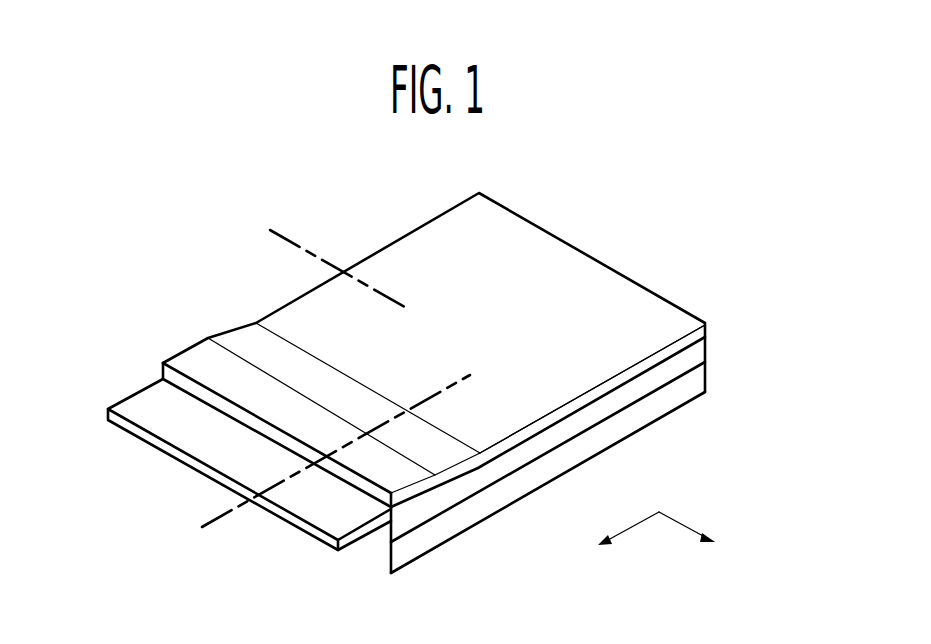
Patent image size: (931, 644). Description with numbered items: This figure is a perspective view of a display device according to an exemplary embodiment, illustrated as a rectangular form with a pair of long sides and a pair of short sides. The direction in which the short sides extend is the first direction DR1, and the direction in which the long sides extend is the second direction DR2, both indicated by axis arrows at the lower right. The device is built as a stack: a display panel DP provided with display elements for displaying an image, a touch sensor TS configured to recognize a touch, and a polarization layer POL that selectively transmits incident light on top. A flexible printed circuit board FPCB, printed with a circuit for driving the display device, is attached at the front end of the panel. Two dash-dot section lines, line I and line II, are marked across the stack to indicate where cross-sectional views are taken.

The display panel DP is at (707, 383).
The touch sensor TS is at (707, 357).
The polarization layer POL is at (707, 330).
The flexible printed circuit board FPCB is at (142, 406).
The section line I-I' I is at (224, 521).
The section line II-II' II is at (278, 239).
The first direction DR1 is at (706, 538).
The second direction DR2 is at (614, 547).